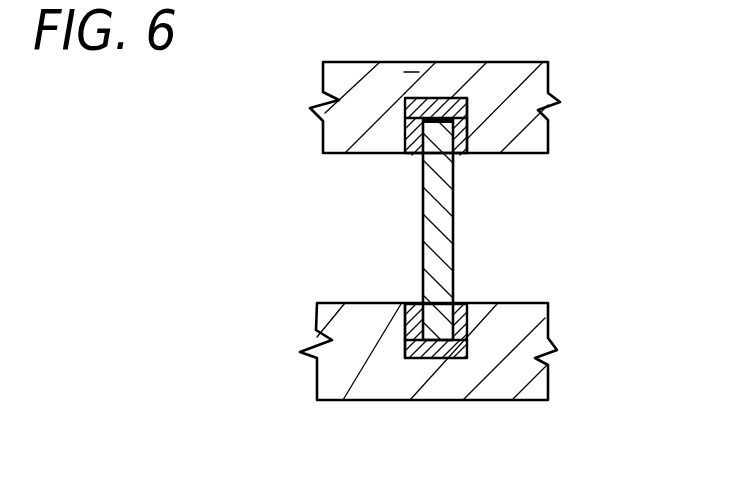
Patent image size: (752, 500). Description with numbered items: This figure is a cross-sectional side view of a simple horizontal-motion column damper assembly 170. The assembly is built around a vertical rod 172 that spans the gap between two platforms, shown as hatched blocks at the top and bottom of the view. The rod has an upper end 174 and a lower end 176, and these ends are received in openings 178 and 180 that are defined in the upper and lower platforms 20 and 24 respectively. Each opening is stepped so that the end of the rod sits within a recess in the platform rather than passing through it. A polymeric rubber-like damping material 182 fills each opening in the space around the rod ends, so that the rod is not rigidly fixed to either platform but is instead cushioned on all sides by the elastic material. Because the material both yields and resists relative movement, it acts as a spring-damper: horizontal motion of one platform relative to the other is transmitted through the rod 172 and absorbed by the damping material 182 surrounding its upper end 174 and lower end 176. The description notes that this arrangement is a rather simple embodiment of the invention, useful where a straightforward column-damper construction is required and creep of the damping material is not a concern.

The upper platform 20 is at (444, 400).
The lower platform 24 is at (365, 74).
The column damper assembly 170 is at (419, 229).
The rod 172 is at (455, 206).
The upper end 174 is at (437, 118).
The lower end 176 is at (470, 320).
The opening 178 is at (406, 131).
The opening 180 is at (407, 350).
The polymeric rubber-like damping material 182 is at (470, 134).